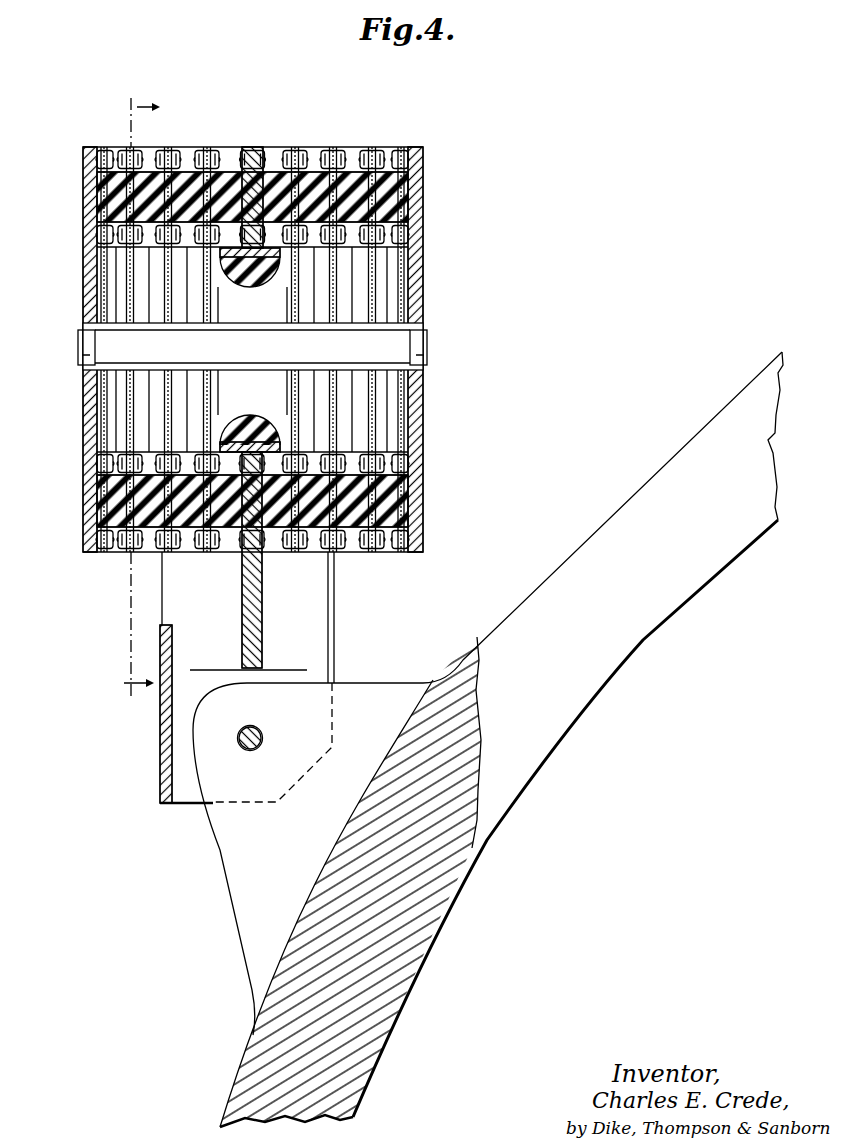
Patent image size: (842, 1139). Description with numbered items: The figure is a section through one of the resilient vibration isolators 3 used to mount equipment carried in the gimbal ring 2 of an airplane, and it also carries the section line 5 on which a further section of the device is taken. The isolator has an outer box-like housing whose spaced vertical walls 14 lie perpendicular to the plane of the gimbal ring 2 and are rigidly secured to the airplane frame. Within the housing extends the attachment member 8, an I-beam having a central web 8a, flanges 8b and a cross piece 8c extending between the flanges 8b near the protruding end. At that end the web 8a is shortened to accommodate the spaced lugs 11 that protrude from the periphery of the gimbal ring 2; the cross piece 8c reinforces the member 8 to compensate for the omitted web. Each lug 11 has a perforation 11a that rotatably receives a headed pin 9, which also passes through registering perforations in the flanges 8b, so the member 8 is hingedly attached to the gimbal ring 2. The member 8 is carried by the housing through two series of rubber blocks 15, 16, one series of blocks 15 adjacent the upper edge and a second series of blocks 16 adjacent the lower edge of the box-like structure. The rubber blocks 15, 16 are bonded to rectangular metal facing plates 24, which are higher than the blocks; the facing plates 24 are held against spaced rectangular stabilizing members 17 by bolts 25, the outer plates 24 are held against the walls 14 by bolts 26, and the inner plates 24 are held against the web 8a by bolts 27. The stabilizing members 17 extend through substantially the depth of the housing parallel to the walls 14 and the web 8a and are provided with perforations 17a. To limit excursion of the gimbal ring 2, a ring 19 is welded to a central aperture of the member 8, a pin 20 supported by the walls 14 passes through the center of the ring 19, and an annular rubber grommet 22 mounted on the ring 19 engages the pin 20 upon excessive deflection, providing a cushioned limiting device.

The gimbal ring 2 is at (545, 575).
The isolator 3 is at (432, 169).
The section line 5- 5 is at (128, 399).
The attachment member 8 is at (245, 677).
The central web 8a is at (256, 148).
The flanges 8b is at (330, 598).
The cross piece 8c is at (163, 731).
The headed pin 9 is at (247, 745).
The lugs 11 is at (232, 838).
The perforation 11a is at (261, 735).
The vertical walls 14 is at (87, 310).
The rubber blocks 15 is at (182, 182).
The rubber blocks 16 is at (105, 500).
The stabilizing members 17 is at (165, 303).
The perforations 17a is at (125, 274).
The ring 19 is at (250, 281).
The pin 20 is at (400, 340).
The annular rubber grommet 22 is at (251, 412).
The facing plates 24 is at (112, 142).
The bolts 25 is at (135, 150).
The bolts 26 is at (90, 157).
The bolts 27 is at (290, 150).